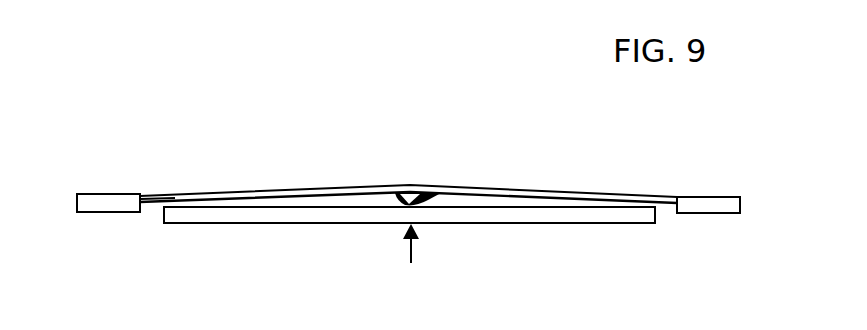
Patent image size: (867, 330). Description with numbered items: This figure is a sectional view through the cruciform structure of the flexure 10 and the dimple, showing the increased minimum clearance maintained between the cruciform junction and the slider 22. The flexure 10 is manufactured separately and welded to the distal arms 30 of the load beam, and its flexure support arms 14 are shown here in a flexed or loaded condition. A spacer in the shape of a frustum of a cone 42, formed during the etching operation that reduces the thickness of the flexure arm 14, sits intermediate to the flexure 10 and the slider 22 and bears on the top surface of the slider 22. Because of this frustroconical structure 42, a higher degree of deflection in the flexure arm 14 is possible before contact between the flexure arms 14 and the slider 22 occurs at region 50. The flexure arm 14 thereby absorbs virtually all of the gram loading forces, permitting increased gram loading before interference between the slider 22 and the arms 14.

The flexure 10 is at (409, 186).
The flexure arm 14 is at (257, 190).
The slider 22 is at (522, 222).
The distal arms 30 is at (117, 206).
The frustum of a cone 42 is at (438, 195).
The region 50 is at (172, 199).